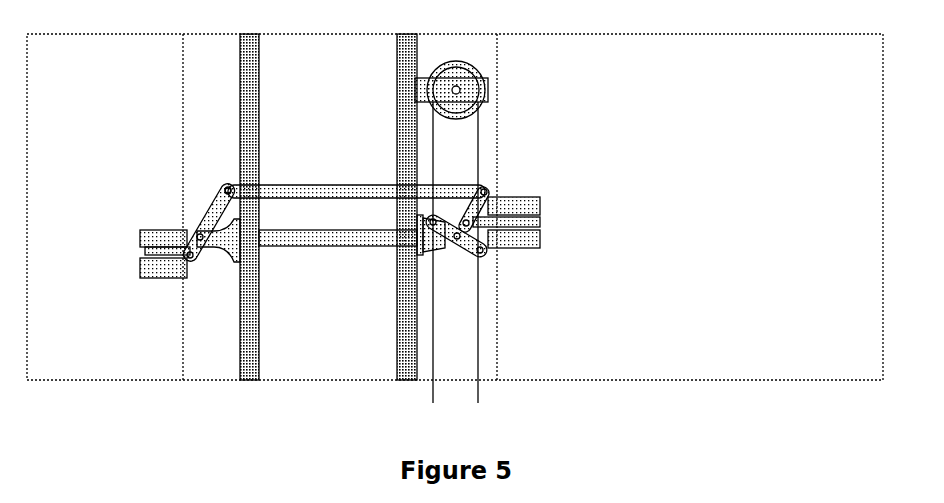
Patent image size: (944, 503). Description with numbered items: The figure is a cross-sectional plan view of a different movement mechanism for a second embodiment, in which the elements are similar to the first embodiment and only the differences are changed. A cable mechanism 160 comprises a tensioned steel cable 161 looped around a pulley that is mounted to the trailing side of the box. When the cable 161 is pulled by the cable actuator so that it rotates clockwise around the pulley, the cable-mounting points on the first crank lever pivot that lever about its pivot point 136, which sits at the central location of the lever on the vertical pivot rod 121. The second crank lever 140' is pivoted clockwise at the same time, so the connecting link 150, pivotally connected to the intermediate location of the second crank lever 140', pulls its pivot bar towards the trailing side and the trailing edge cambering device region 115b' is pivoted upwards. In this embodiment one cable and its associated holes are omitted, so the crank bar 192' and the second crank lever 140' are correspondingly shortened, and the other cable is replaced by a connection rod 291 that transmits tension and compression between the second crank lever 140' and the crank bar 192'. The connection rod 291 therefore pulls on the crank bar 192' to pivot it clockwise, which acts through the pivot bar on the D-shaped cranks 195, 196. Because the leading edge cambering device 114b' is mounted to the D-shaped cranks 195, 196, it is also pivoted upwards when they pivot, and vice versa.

The leading edge cambering device (pivot bar side) 114b' is at (117, 207).
The trailing edge cambering device region 115b' is at (652, 207).
The pivot rod 121 is at (347, 240).
The connection rod 291 is at (307, 192).
The crank bar 192' is at (176, 177).
The D-shaped crank 196 is at (163, 230).
The D-shaped crank 195 is at (166, 266).
The second crank lever 140' is at (534, 176).
The pivot point 136 is at (457, 240).
The connecting link 150 is at (540, 222).
The cable mechanism 160 is at (483, 74).
The cable 161 is at (479, 393).